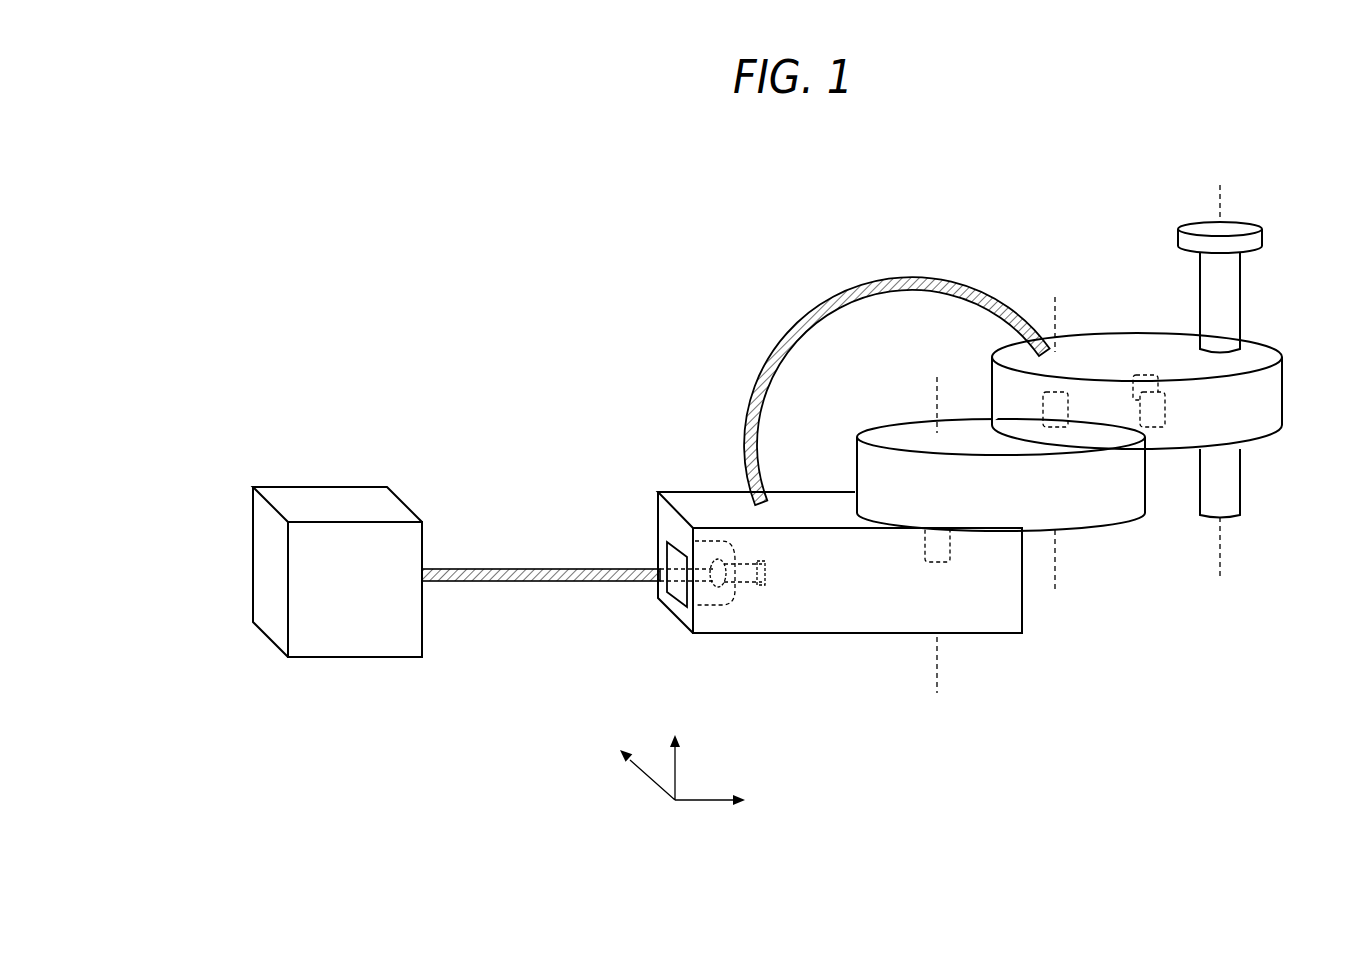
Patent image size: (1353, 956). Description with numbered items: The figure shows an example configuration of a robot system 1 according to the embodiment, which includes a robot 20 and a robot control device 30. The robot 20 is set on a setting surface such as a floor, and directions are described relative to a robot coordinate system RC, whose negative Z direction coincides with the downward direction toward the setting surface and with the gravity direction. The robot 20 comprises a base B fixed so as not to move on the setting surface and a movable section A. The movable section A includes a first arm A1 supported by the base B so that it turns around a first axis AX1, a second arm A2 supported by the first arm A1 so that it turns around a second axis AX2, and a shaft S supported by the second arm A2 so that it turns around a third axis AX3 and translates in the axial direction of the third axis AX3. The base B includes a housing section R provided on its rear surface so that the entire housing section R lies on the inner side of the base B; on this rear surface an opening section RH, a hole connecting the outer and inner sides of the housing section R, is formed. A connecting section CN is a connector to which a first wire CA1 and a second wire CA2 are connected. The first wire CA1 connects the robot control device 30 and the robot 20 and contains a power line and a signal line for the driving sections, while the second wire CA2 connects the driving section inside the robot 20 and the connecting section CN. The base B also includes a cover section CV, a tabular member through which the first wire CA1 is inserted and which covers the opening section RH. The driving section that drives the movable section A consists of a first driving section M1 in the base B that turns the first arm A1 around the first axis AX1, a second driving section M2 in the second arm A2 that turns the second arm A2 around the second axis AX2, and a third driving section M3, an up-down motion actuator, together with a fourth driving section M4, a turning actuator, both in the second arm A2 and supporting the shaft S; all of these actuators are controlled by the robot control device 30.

The robot system 1 is at (568, 270).
The robot 20 is at (786, 216).
The robot control device 30 is at (340, 487).
The first wire CA1 is at (480, 568).
The second wire CA2 is at (745, 559).
The base B is at (657, 520).
The cover section CV is at (611, 580).
The opening section RH is at (660, 601).
The housing section R is at (734, 596).
The connecting section CN is at (730, 548).
The first driving section M1 is at (925, 536).
The second driving section M2 is at (1040, 411).
The third driving section M3 is at (1133, 391).
The fourth driving section M4 is at (1168, 414).
The movable section A is at (1297, 197).
The first arm A1 is at (885, 421).
The second arm A2 is at (990, 357).
The shaft S is at (1195, 281).
The first axis AX1 is at (940, 665).
The second axis AX2 is at (1058, 564).
The third axis AX3 is at (1223, 548).
The robot coordinate system RC is at (695, 777).